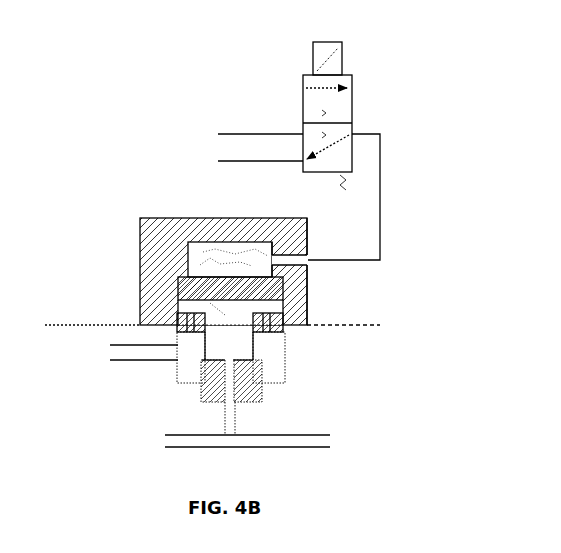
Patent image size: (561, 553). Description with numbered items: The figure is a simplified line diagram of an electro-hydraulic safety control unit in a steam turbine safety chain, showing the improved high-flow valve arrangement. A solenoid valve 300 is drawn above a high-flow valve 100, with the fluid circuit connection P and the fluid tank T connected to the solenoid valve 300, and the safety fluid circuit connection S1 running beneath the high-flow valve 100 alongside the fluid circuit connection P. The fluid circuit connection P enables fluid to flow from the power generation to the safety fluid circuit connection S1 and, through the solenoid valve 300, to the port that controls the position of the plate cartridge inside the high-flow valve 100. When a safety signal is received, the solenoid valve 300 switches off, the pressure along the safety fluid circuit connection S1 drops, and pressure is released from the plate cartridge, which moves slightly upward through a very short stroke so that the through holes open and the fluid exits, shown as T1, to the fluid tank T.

The solenoid valve 300 is at (313, 58).
The high-flow valve 100 is at (230, 287).
The fluid circuit connection P is at (260, 120).
The fluid tank T is at (260, 177).
The fluid exit T1 is at (119, 355).
The safety fluid circuit connection S1 is at (255, 443).